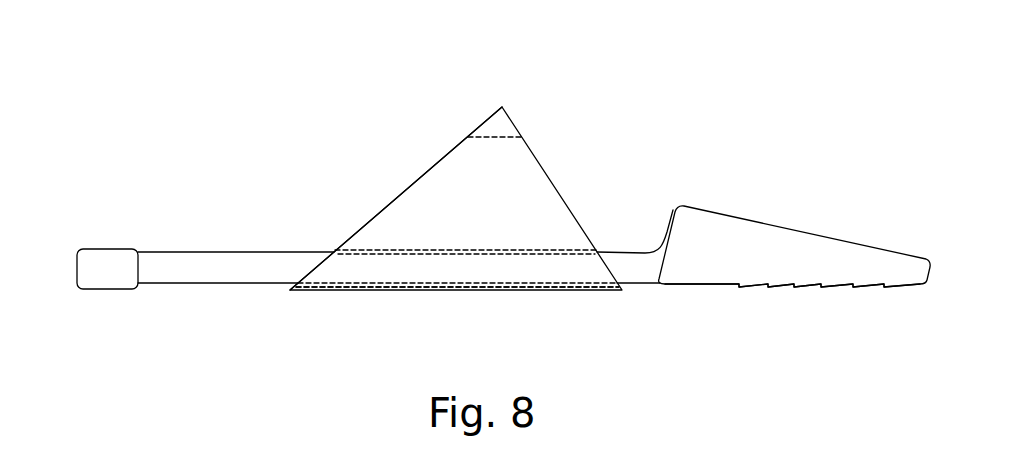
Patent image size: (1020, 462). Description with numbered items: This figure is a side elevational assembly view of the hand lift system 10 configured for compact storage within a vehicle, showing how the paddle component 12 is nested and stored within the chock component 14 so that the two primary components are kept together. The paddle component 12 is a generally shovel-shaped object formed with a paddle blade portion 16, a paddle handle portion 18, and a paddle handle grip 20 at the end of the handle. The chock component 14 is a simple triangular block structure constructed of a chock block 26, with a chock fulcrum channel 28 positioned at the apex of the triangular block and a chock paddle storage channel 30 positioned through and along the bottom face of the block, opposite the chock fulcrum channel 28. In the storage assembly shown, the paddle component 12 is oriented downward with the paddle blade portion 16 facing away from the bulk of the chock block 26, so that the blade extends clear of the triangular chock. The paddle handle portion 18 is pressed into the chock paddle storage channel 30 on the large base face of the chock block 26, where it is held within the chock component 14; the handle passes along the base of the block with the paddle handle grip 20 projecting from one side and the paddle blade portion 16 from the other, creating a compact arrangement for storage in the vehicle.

The hand lift system 10 is at (293, 143).
The paddle component 12 is at (849, 229).
The chock component 14 is at (571, 189).
The paddle blade portion 16 is at (693, 273).
The paddle handle portion 18 is at (307, 256).
The paddle handle grip 20 is at (106, 249).
The chock block 26 is at (390, 203).
The chock fulcrum channel 28 is at (503, 128).
The chock paddle storage channel 30 is at (462, 271).